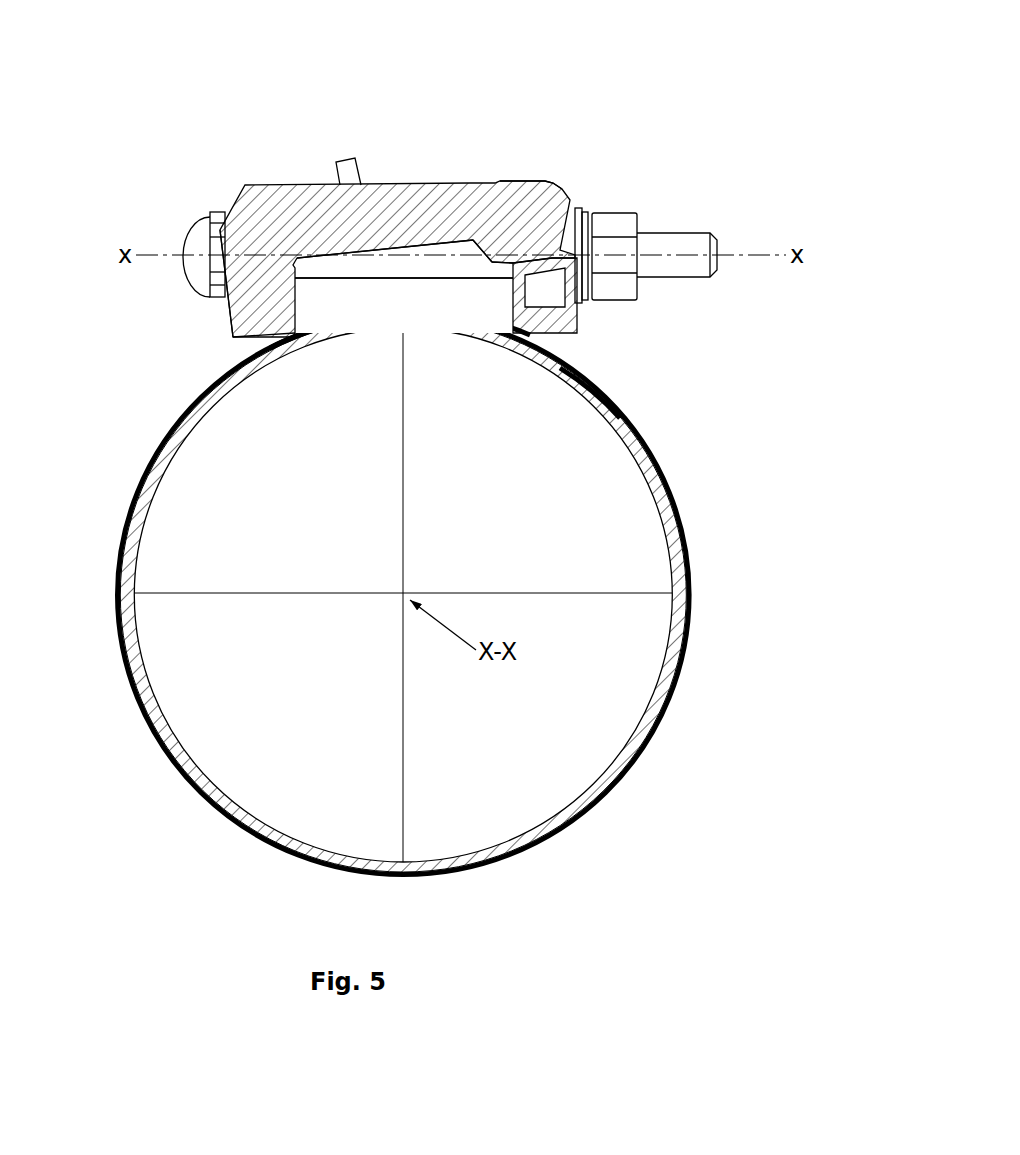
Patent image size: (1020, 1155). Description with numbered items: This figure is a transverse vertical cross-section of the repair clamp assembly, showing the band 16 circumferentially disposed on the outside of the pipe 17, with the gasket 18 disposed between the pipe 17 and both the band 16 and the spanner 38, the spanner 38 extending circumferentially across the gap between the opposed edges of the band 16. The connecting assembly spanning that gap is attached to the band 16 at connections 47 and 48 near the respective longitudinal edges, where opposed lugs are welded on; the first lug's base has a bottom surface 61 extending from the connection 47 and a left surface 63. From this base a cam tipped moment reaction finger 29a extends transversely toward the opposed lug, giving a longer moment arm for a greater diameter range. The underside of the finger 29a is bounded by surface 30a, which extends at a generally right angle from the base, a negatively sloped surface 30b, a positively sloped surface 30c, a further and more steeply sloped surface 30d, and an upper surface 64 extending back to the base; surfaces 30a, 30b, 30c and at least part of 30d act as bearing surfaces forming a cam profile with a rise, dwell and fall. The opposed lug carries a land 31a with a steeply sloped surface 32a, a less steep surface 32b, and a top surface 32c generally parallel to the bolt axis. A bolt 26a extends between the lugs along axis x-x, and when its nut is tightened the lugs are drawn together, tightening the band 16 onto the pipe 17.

The band 16 is at (693, 588).
The pipe 17 is at (133, 580).
The gasket 18 is at (332, 336).
The bolt 26a is at (687, 233).
The finger 29a is at (405, 185).
The surface 30a is at (367, 257).
The negatively sloped surface 30b is at (480, 263).
The positively sloped surface 30c is at (510, 264).
The further positively sloped surface 30d is at (573, 241).
The land 31a is at (585, 268).
The steeply sloped surface 32a is at (515, 252).
The sloped surface 32b is at (543, 252).
The top surface 32c is at (590, 233).
The spanner 38 is at (592, 396).
The connection 47 is at (295, 340).
The connection 48 is at (508, 342).
The bottom surface 61 is at (243, 338).
The left surface 63 is at (228, 329).
The upper surface 64 is at (380, 185).